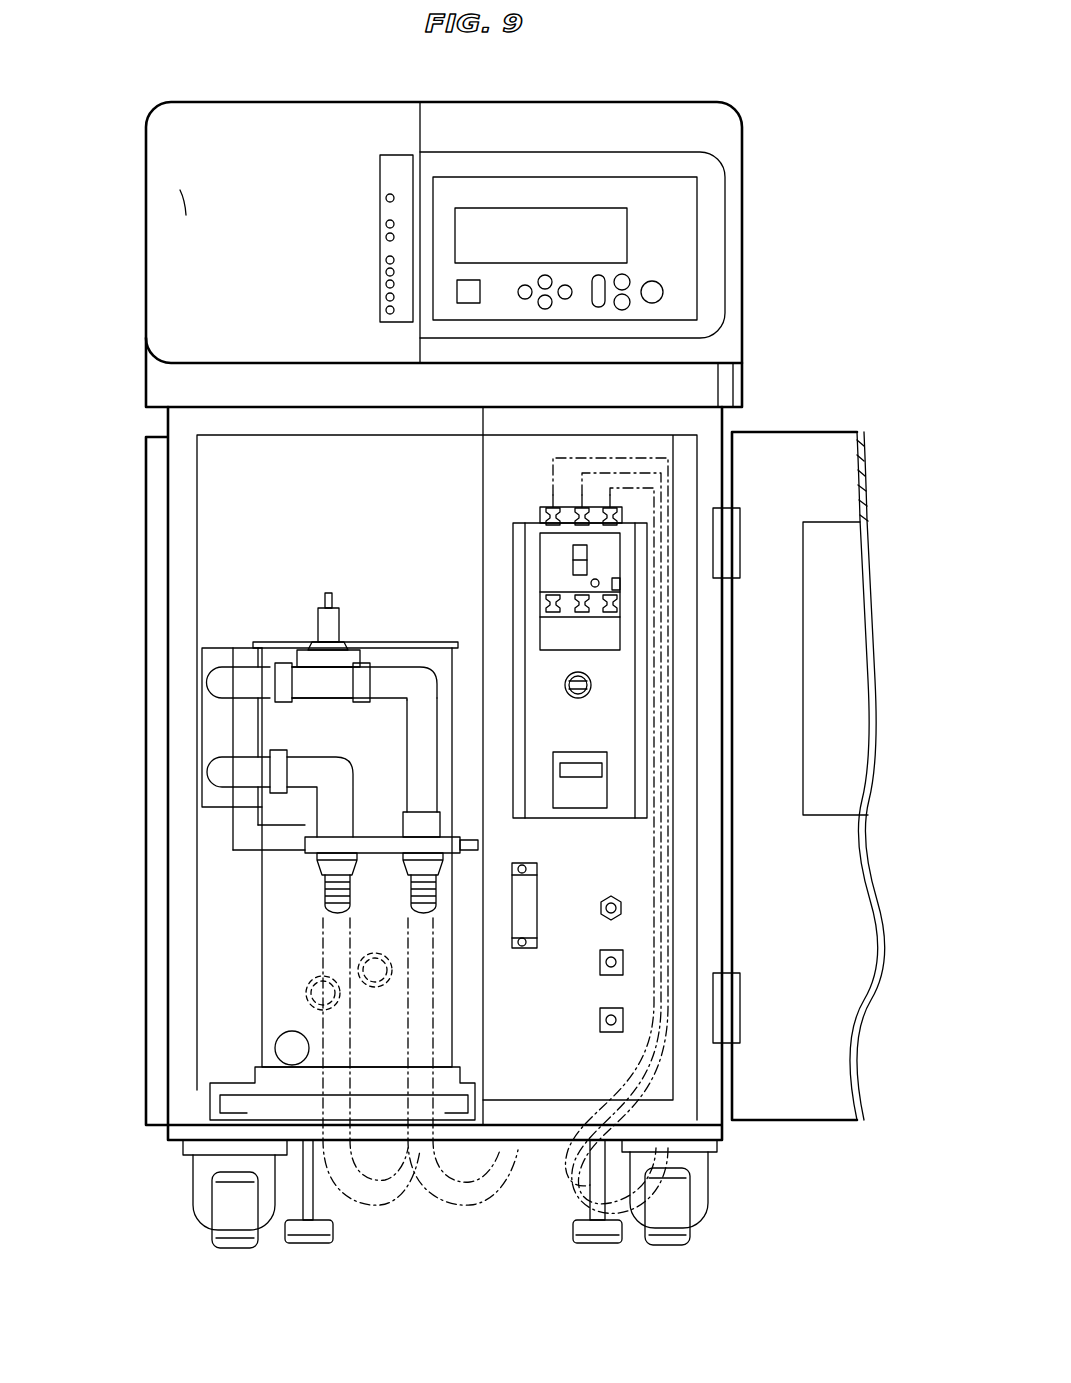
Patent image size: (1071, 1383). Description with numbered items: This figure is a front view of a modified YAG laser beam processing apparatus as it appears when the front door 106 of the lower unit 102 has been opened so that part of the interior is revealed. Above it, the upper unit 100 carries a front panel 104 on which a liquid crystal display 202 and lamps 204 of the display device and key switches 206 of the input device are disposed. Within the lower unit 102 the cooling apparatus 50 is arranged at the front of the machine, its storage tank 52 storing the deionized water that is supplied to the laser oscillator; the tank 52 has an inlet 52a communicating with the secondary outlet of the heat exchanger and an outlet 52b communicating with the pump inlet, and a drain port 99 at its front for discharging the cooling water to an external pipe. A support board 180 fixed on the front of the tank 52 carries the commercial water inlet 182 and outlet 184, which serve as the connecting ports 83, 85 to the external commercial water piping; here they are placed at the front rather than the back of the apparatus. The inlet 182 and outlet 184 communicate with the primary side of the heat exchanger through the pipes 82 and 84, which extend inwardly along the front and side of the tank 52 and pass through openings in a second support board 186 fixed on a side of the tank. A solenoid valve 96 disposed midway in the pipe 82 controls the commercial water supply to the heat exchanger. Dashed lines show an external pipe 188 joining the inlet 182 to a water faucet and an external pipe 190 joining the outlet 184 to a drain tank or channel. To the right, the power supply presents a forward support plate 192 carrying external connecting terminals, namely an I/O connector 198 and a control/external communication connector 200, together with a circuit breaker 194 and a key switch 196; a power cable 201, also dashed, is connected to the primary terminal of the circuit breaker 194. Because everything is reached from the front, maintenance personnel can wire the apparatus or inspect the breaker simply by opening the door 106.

The upper unit 100 is at (645, 98).
The lower unit 102 is at (140, 510).
The front panel 104 is at (182, 190).
The front panel (door) 106 is at (820, 455).
The cooling apparatus 50 is at (225, 593).
The storage tank 52 is at (427, 653).
The inlet of the tank 52a is at (308, 988).
The outlet of the tank 52b is at (375, 990).
The pipe 82 is at (397, 700).
The connecting port 83 is at (408, 900).
The pipe 84 is at (332, 765).
The connecting port 85 is at (322, 902).
The solenoid valve 96 is at (323, 622).
The drain port 99 is at (283, 1048).
The support board 180 is at (303, 870).
The commercial water inlet 182 is at (412, 818).
The commercial water outlet 184 is at (250, 827).
The support board 186 is at (216, 726).
The external pipe 188 is at (458, 1195).
The external pipe 190 is at (365, 1195).
The forward support plate 192 is at (635, 482).
The circuit breaker 194 is at (570, 553).
The key switch 196 is at (590, 685).
The I/O connector 198 is at (540, 883).
The control/external communication connector 200 is at (600, 1018).
The power cable 201 is at (662, 597).
The liquid crystal display 202 is at (602, 225).
The lamps 204 is at (380, 207).
The key switches 206 is at (597, 320).